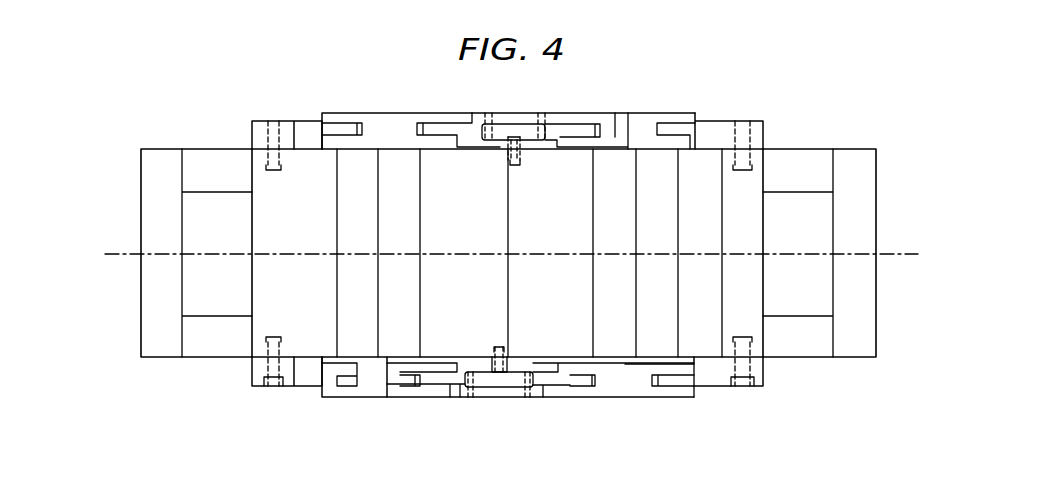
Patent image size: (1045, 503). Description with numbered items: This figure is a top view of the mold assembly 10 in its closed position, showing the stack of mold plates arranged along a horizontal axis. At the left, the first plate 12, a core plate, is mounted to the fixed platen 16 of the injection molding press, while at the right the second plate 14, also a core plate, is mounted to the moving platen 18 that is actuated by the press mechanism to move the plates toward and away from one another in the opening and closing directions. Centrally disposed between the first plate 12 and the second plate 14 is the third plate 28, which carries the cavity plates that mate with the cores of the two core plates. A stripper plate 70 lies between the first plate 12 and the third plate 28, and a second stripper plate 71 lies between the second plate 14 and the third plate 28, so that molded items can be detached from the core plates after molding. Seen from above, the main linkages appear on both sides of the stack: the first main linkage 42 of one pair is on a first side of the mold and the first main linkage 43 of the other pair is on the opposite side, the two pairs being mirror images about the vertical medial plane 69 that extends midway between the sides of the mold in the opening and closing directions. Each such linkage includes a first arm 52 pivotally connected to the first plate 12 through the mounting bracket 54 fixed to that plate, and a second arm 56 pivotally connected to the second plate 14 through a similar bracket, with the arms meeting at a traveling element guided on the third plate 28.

The mold assembly 10 is at (204, 88).
The first plate 12 is at (270, 185).
The second plate 14 is at (755, 178).
The fixed platen 16 is at (158, 272).
The moving platen 18 is at (868, 300).
The third plate 28 is at (448, 162).
The upper linkage 42 is at (523, 403).
The first main linkage 43 is at (547, 107).
The first arm 52 is at (365, 388).
The mounting bracket 54 is at (307, 142).
The second arm 56 is at (617, 390).
The vertical medial plane 69 is at (888, 254).
The stripper plate 70 is at (343, 330).
The second stripper plate 71 is at (655, 347).